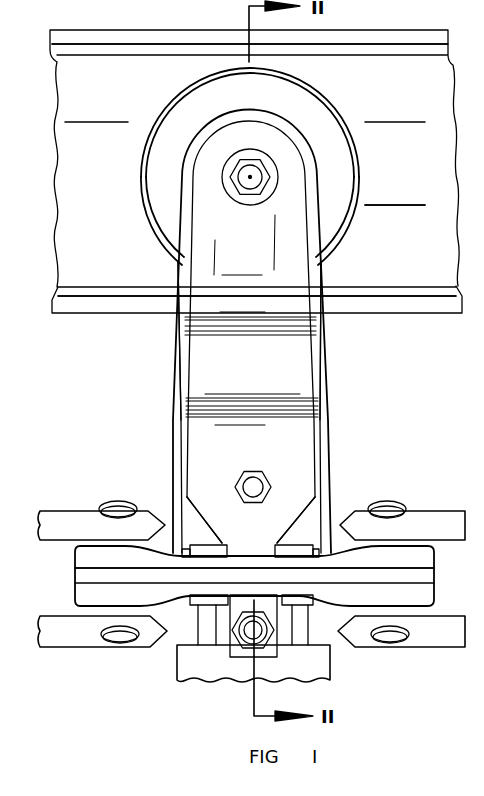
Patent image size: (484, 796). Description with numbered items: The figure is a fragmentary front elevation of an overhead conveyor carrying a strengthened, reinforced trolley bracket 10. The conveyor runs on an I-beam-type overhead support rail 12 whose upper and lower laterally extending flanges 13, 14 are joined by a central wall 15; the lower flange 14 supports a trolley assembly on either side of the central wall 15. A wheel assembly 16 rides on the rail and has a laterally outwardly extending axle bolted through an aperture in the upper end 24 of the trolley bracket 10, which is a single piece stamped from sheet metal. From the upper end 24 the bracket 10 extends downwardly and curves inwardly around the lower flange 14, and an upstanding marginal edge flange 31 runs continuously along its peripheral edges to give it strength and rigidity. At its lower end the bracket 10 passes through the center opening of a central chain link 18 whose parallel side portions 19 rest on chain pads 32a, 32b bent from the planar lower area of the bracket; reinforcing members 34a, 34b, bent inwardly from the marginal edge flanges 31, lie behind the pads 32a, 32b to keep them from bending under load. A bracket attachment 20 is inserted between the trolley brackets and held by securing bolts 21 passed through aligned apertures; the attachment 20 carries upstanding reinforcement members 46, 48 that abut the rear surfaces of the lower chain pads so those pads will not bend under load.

The trolley bracket 10 is at (340, 428).
The overhead support rail 12 is at (377, 24).
The upper flange 13 is at (377, 47).
The lower flange 14 is at (372, 291).
The central wall 15 is at (405, 168).
The wheel assembly 16 is at (168, 115).
The central chain link 18 is at (422, 565).
The side portions 19 is at (235, 562).
The bracket attachment 20 is at (340, 675).
The securing bolt 21 is at (258, 627).
The upper end 24 is at (232, 239).
The marginal edge flange 31 is at (322, 382).
The chain pad 32a is at (280, 546).
The chain pad 32b is at (214, 546).
The reinforcing member 34a is at (306, 525).
The reinforcing member 34b is at (190, 520).
The reinforcement member 46 is at (205, 622).
The reinforcement member 48 is at (305, 623).